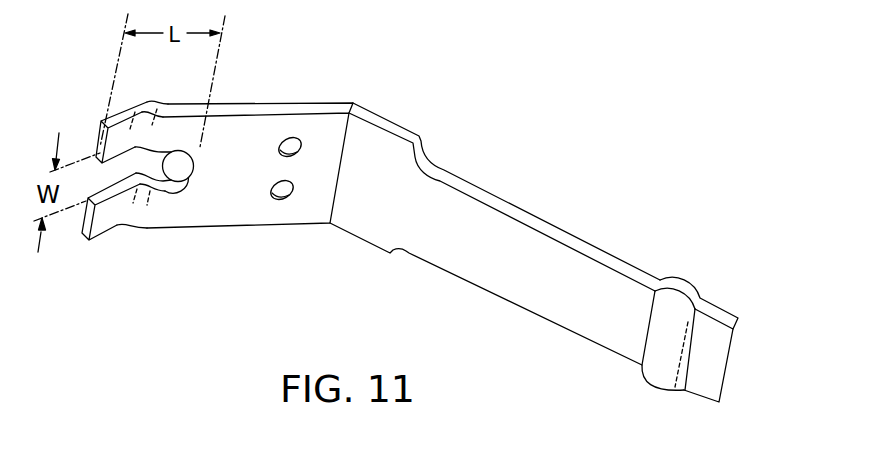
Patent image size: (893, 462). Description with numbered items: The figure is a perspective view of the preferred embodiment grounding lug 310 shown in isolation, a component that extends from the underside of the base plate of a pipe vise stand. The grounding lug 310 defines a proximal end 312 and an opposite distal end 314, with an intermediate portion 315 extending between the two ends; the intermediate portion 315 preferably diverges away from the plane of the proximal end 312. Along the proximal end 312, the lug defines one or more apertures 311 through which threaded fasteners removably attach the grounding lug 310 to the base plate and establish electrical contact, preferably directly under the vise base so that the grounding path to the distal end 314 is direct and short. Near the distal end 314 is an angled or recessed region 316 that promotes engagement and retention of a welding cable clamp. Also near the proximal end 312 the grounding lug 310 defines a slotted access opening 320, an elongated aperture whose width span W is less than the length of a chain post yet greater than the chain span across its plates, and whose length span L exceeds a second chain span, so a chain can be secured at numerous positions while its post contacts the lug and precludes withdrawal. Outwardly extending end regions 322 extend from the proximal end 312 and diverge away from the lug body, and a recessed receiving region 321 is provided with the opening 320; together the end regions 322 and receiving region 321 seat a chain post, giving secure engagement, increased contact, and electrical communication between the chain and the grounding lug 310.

The grounding lug 310 is at (416, 230).
The apertures 311 is at (272, 196).
The proximal end 312 is at (237, 137).
The distal end 314 is at (728, 357).
The intermediate portion 315 is at (513, 250).
The angled or recessed region 316 is at (658, 373).
The slotted access opening 320 is at (173, 150).
The recessed receiving region 321 is at (145, 122).
The outwardly extending end regions 322 is at (100, 143).